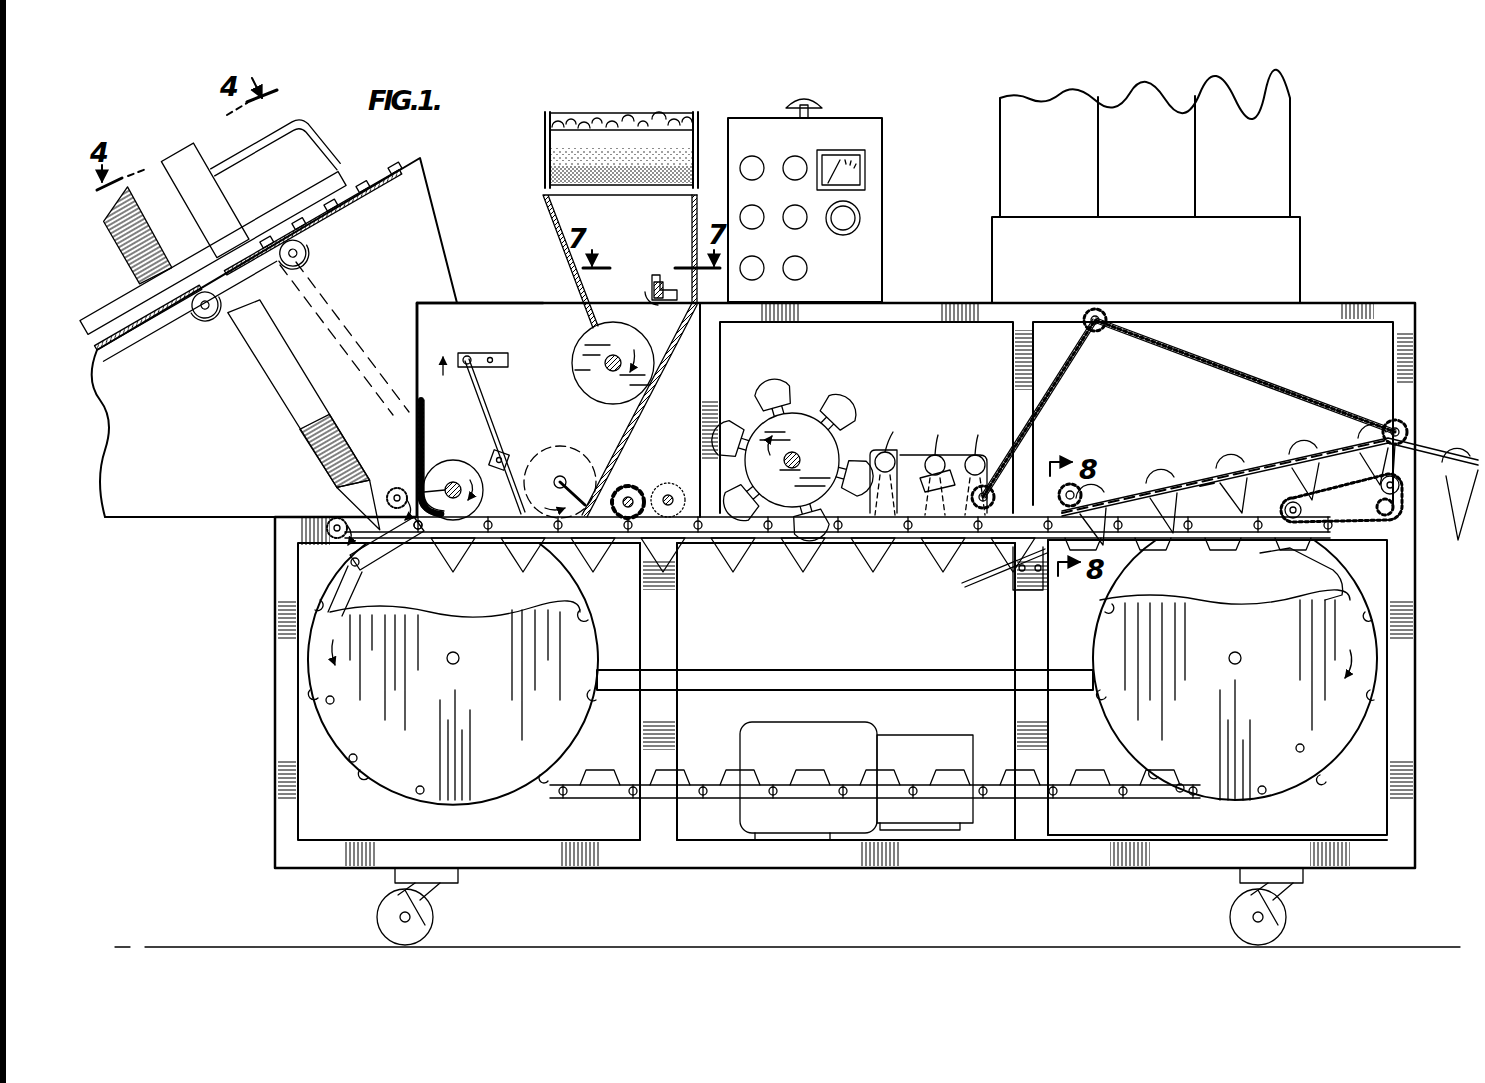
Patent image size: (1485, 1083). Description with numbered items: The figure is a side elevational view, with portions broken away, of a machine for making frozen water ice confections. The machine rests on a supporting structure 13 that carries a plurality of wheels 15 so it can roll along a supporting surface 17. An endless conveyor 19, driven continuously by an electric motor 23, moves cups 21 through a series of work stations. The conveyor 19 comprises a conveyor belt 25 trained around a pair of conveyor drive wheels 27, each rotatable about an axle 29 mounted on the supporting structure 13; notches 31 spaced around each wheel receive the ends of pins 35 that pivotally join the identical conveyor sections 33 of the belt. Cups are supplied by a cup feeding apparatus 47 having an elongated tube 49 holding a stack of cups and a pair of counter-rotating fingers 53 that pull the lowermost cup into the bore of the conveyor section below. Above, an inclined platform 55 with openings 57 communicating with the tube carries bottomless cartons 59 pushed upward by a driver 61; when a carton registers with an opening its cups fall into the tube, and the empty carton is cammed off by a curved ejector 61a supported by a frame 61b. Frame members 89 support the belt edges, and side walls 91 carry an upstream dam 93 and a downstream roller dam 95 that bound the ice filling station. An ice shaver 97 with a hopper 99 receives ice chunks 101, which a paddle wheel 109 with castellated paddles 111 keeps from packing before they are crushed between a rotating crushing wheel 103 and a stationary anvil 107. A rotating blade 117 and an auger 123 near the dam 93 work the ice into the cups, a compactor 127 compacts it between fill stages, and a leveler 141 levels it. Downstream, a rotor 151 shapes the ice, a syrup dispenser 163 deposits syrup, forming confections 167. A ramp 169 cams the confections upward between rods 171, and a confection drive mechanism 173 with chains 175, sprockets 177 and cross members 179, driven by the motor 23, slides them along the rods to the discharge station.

The supporting structure 13 is at (279, 631).
The wheels 15 is at (432, 918).
The supporting surface 17 is at (220, 945).
The conveyor 19 is at (297, 592).
The cups 21 is at (186, 310).
The electric motor 23 is at (756, 823).
The conveyor belt 25 is at (300, 592).
The conveyor drive wheels 27 is at (322, 658).
The axle 29 is at (453, 668).
The notches 31 is at (549, 565).
The conveyor sections 33 is at (562, 792).
The pins 35 is at (345, 562).
The cup feeding apparatus 47 is at (280, 418).
The elongated tube 49 is at (262, 380).
The rotatable fingers 53 is at (402, 492).
The inclined platform 55 is at (333, 228).
The openings 57 is at (231, 322).
The cartons 59 is at (184, 172).
The driver 61 is at (134, 277).
The curved ejector 61a is at (243, 150).
The frame 61b is at (297, 194).
The frame members 89 is at (782, 545).
The side walls 91 is at (500, 310).
The upstream dam 93 is at (427, 420).
The downstream dam 95 is at (683, 482).
The ice shaver 97 is at (613, 131).
The hopper 99 is at (546, 156).
The ice chunks 101 is at (620, 118).
The crushing wheel 103 is at (590, 348).
The anvil 107 is at (690, 357).
The paddle wheel 109 is at (668, 272).
The paddles 111 is at (647, 292).
The blade 117 is at (596, 440).
The auger 123 is at (472, 478).
The compactor 127 is at (495, 401).
The leveler 141 is at (656, 462).
The rotor 151 is at (806, 412).
The syrup dispenser 163 is at (908, 445).
The confection 167 is at (1300, 452).
The ramp 169 is at (1002, 574).
The rods 171 is at (1440, 453).
The confection drive mechanism 173 is at (1223, 415).
The chains 175 is at (1296, 393).
The sprockets 177 is at (1091, 333).
The cross members 179 is at (1203, 484).